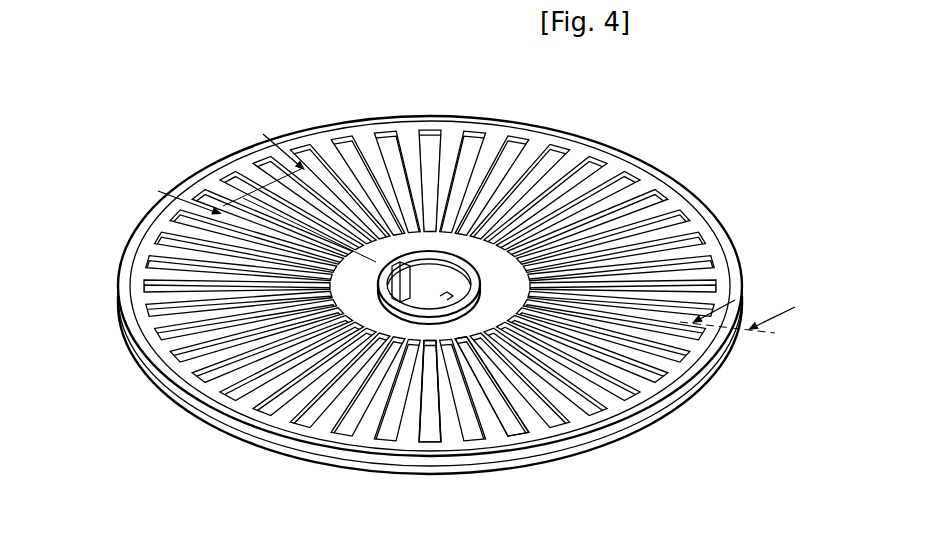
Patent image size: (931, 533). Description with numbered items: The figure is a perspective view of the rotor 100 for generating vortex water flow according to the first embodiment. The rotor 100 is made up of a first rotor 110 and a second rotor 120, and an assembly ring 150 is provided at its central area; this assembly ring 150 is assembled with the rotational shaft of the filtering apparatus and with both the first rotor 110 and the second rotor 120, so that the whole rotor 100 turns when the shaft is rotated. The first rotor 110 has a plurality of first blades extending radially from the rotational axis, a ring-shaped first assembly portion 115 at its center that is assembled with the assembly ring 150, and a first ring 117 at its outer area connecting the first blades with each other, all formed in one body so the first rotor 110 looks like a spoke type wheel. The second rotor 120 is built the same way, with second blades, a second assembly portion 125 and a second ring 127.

The rotor 100 is at (516, 69).
The first rotor 110 is at (712, 211).
The first assembly portion 115 is at (440, 345).
The first ring 117 is at (587, 441).
The second rotor 120 is at (579, 149).
The second assembly portion 125 is at (395, 322).
The second ring 127 is at (531, 434).
The assembly ring 150 is at (380, 265).